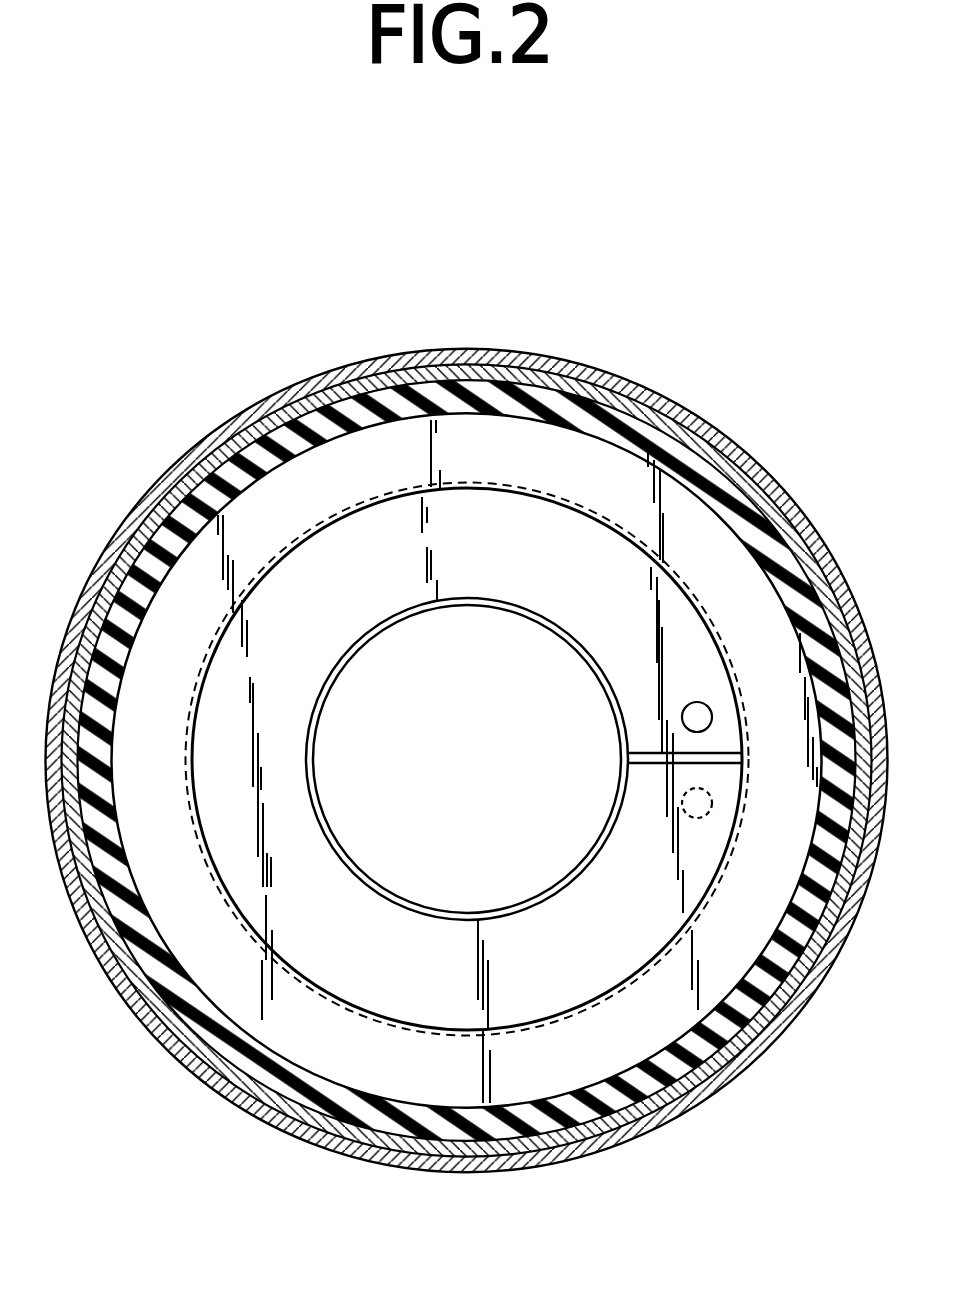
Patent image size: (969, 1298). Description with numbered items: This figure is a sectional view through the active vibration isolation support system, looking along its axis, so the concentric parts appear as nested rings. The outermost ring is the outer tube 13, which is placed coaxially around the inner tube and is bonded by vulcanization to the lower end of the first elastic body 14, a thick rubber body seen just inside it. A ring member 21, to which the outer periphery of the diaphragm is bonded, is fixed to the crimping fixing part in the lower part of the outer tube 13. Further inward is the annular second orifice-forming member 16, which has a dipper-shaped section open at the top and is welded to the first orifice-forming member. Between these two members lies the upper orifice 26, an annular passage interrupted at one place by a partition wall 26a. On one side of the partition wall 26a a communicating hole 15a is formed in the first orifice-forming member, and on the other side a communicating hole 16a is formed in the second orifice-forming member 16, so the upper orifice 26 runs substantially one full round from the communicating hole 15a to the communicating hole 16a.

The outer tube 13 is at (713, 418).
The ring member 21 is at (250, 428).
The first elastic body 14 is at (481, 387).
The upper orifice 26 is at (552, 577).
The partition wall 26a is at (653, 763).
The second orifice-forming member 16 is at (387, 627).
The communicating hole 16a is at (685, 708).
The communicating hole 15a is at (690, 812).